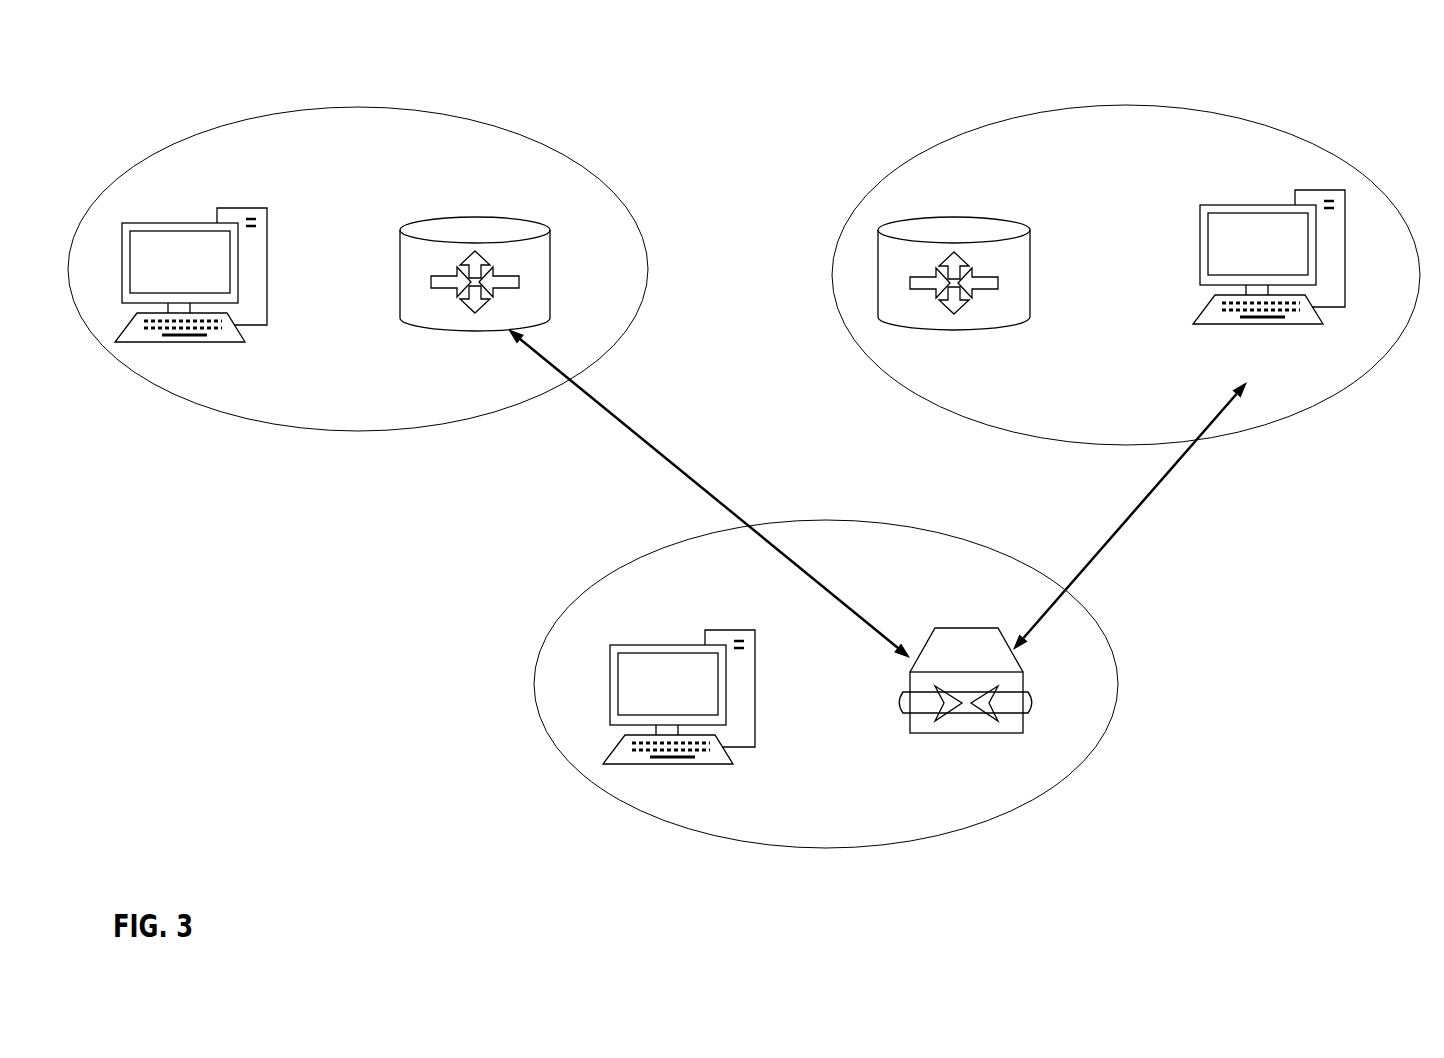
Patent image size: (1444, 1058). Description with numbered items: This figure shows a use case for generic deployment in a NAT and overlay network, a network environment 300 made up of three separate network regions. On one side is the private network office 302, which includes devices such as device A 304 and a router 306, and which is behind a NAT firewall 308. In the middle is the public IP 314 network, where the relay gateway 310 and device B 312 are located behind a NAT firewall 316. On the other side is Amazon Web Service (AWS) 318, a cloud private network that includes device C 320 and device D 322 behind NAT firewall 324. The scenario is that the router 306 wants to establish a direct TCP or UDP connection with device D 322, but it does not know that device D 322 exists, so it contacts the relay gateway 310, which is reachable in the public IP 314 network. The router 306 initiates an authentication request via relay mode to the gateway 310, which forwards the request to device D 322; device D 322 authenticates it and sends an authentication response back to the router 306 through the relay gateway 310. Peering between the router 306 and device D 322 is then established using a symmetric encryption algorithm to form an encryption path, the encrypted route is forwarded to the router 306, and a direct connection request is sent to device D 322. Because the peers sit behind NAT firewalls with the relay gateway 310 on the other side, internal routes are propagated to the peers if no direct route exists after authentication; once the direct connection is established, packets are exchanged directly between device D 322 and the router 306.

The network environment 300 is at (1330, 84).
The private network office 302 is at (437, 409).
The device A 304 is at (303, 192).
The router 306 is at (538, 192).
The NAT firewall 308 is at (472, 462).
The relay gateway 310 is at (1063, 609).
The device B 312 is at (767, 606).
The public IP network 314 is at (933, 816).
The NAT firewall 316 is at (986, 519).
The Amazon Web Service (AWS) 318 is at (1185, 169).
The device C 320 is at (1071, 375).
The device D 322 is at (1336, 378).
The NAT firewall 324 is at (1371, 472).